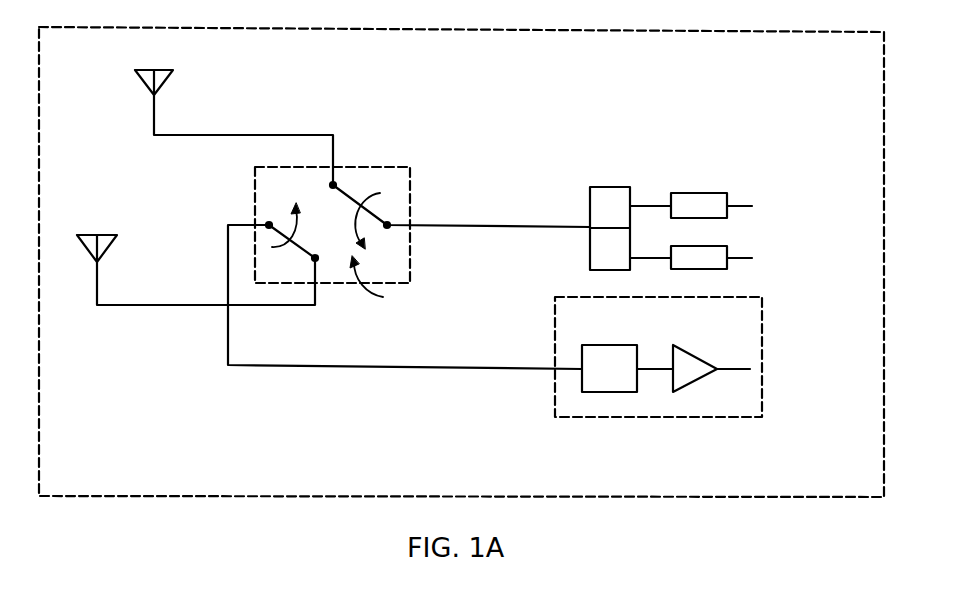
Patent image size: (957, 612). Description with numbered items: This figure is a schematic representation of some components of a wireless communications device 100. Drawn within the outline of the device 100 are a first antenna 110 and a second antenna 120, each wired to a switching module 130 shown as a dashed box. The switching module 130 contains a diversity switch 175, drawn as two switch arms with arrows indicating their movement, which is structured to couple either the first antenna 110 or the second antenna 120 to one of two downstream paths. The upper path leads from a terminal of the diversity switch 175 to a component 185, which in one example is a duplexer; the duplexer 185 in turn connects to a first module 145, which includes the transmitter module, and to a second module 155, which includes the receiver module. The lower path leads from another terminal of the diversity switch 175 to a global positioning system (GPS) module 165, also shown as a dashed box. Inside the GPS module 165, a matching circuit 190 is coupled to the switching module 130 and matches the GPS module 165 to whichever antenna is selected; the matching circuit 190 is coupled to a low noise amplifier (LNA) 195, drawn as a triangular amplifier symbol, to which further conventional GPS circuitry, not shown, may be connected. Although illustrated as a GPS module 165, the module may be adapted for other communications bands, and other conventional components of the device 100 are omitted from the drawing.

The wireless communications device 100 is at (884, 110).
The first antenna 110 is at (154, 117).
The second antenna 120 is at (97, 283).
The switching module 130 is at (348, 167).
The diversity switch 175 is at (387, 285).
The component (duplexer) 185 is at (610, 187).
The first module 145 is at (703, 193).
The second module 155 is at (712, 270).
The global positioning system (GPS) module 165 is at (683, 418).
The matching circuit 190 is at (594, 345).
The low noise amplifier (LNA) 195 is at (690, 352).